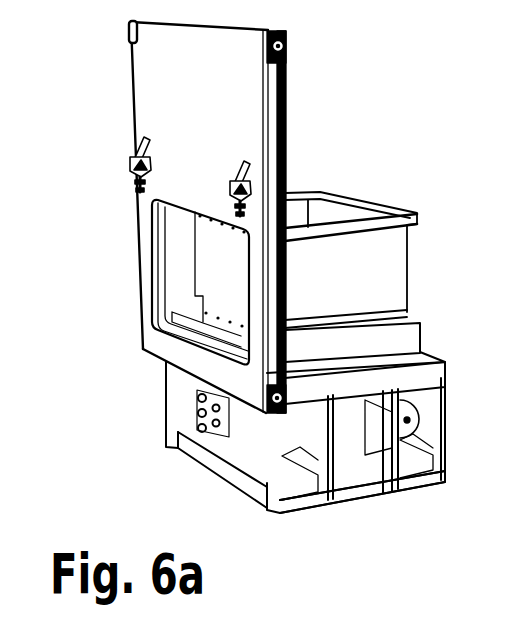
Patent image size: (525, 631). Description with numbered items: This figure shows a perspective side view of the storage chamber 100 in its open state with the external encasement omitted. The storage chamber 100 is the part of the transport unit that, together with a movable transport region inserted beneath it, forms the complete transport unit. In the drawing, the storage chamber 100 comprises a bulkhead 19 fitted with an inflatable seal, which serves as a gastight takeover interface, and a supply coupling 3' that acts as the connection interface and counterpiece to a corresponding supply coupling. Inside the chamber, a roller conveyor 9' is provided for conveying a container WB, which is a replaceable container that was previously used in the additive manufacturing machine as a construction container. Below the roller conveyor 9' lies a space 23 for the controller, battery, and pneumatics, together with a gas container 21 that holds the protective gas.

The storage chamber 100 is at (272, 302).
The bulkhead 19 is at (167, 335).
The supply coupling 3' is at (200, 454).
The container WB is at (397, 200).
The roller conveyor 9' is at (384, 327).
The gas container 21 is at (418, 411).
The space for controller, battery, and pneumatics 23 is at (393, 487).